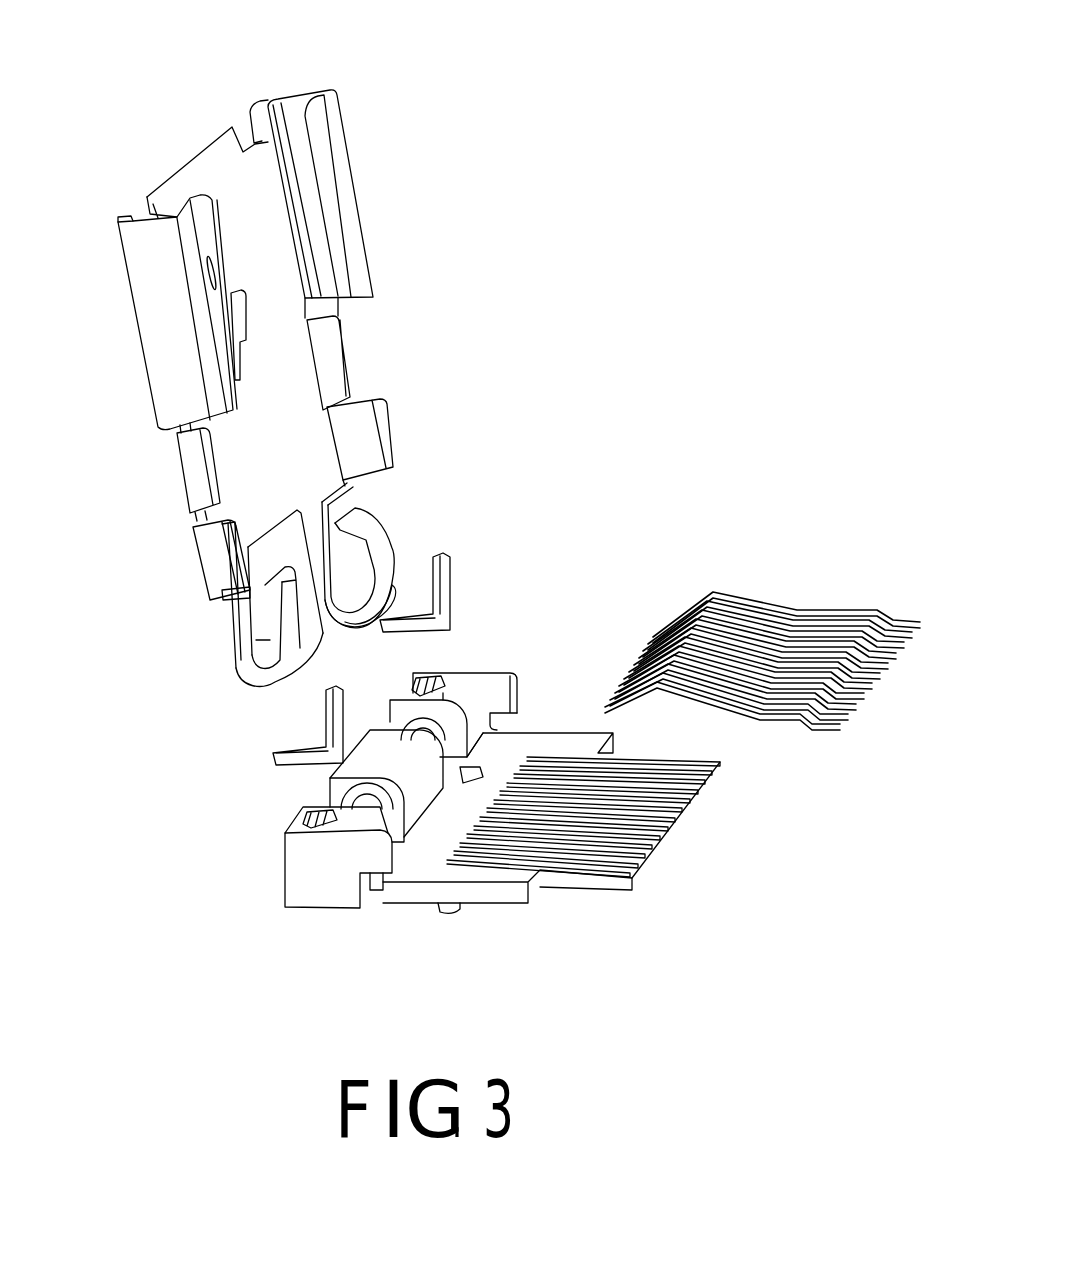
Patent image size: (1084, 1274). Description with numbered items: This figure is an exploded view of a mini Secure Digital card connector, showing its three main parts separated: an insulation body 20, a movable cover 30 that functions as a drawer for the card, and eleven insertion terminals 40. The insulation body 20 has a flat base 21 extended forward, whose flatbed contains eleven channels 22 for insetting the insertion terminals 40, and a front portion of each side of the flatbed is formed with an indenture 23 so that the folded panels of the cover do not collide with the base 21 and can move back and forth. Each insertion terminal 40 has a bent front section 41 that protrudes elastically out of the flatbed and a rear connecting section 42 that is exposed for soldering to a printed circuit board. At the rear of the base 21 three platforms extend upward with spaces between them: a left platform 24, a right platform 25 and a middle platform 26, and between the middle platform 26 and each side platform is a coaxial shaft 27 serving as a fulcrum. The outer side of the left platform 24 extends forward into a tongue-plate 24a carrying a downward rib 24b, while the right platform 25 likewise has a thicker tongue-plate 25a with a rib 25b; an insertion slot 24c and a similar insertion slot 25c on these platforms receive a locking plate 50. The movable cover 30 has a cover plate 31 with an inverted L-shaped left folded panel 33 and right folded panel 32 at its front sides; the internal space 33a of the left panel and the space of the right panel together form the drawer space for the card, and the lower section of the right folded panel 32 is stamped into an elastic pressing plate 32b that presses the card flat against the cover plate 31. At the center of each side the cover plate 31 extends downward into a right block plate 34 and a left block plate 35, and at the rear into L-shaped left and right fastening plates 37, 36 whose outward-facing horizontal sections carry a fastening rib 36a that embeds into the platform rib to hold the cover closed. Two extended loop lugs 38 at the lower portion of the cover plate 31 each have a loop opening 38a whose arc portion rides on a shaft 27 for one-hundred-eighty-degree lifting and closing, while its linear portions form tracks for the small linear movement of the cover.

The insulation body 20 is at (673, 833).
The base 21 is at (597, 747).
The channels 22 is at (647, 797).
The indenture 23 is at (547, 895).
The left platform 24 is at (457, 687).
The tongue-plate 24a is at (507, 675).
The rib 24b is at (520, 710).
The insertion slot 24c is at (433, 693).
The right platform 25 is at (307, 807).
The tongue-plate 25a is at (373, 850).
The rib 25b is at (387, 873).
The insertion slot 25c is at (297, 818).
The middle platform 26 is at (380, 753).
The shaft 27 is at (327, 790).
The movable cover 30 is at (160, 177).
The cover plate 31 is at (210, 147).
The right folded panel 32 is at (157, 340).
The pressing plate 32b is at (220, 283).
The left folded panel 33 is at (350, 212).
The internal space 33a is at (290, 110).
The right block plate 34 is at (197, 467).
The left block plate 35 is at (343, 357).
The right fastening plate 36 is at (208, 552).
The fastening rib 36a is at (230, 597).
The left fastening plate 37 is at (393, 433).
The loop lug 38 is at (377, 532).
The loop opening 38a is at (277, 633).
The insertion terminal 40 is at (828, 625).
The bent front section 41 is at (717, 593).
The rear connecting section 42 is at (893, 625).
The locking plate 50 is at (450, 578).